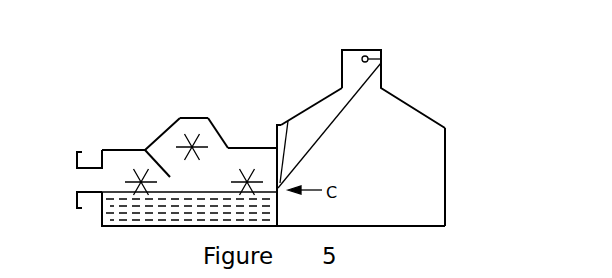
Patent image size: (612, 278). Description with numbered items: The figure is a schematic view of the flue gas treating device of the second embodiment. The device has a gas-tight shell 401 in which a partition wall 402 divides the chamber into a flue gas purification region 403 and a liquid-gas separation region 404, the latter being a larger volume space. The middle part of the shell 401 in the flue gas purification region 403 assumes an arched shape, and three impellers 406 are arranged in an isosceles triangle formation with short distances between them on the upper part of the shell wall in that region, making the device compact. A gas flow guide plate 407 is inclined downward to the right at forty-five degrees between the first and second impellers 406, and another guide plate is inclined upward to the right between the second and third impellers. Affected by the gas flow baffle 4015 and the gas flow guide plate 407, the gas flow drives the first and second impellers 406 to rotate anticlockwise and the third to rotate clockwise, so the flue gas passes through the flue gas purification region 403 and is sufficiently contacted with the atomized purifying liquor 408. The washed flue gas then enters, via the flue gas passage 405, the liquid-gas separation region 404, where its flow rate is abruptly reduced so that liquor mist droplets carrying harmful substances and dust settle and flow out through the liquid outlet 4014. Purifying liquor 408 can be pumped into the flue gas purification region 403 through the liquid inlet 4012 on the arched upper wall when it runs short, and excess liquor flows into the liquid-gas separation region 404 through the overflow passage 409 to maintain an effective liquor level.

The shell 401 is at (163, 133).
The partition wall 402 is at (277, 190).
The flue gas purification region 403 is at (243, 163).
The liquid-gas separation region 404 is at (407, 133).
The flue gas passage 405 is at (288, 121).
The impellers 406 is at (192, 143).
The gas flow guide plate 407 is at (148, 149).
The purifying liquor 408 is at (127, 203).
The overflow passage 409 is at (383, 61).
The liquid inlet 4012 is at (180, 117).
The liquid outlet 4014 is at (446, 210).
The gas flow baffle 4015 is at (99, 149).